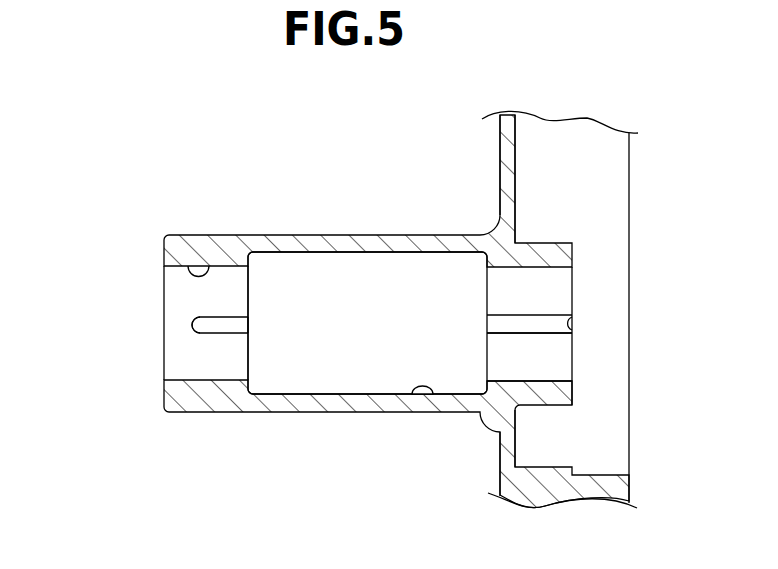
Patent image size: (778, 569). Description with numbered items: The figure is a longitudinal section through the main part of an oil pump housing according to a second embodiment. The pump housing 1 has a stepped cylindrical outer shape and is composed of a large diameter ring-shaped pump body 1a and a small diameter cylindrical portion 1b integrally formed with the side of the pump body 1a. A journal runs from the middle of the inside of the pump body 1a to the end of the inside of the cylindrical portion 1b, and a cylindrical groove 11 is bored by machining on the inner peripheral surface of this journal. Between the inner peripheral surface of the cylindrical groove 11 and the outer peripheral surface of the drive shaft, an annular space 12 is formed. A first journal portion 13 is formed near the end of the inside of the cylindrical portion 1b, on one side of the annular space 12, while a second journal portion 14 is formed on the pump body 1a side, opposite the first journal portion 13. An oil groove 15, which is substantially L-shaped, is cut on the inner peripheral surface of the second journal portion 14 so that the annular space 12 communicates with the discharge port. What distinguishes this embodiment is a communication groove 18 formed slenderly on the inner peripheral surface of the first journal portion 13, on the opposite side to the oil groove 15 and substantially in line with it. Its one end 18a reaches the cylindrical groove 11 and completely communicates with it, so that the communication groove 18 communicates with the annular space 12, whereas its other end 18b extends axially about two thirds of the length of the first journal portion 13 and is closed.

The pump housing 1 is at (319, 226).
The pump body 1a is at (507, 130).
The cylindrical portion 1b is at (378, 405).
The cylindrical groove 11 is at (413, 396).
The annular space 12 is at (398, 262).
The first journal portion 13 is at (209, 266).
The second journal portion 14 is at (546, 358).
The oil groove 15 is at (532, 322).
The communication groove 18 is at (222, 334).
The one end 18a is at (249, 324).
The other end 18b is at (192, 326).